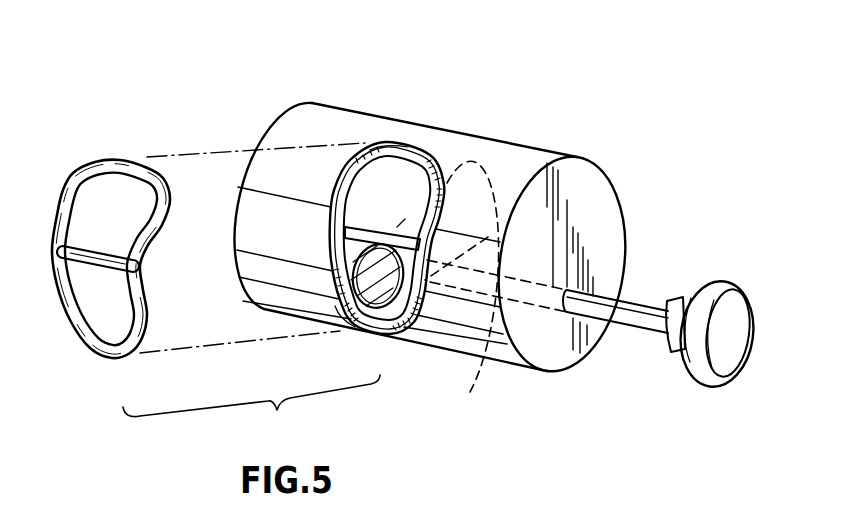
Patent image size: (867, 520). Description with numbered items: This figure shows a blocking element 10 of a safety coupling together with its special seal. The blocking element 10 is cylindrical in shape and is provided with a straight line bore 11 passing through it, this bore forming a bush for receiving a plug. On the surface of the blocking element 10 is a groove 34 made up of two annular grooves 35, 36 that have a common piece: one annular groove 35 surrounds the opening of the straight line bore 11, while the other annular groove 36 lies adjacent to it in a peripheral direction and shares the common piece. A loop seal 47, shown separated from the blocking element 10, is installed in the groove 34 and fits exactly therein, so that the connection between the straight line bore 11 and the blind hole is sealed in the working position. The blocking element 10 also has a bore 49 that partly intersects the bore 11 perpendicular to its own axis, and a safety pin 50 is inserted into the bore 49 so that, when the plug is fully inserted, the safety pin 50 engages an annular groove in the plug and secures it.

The blocking element 10 is at (610, 245).
The straight line bore 11 is at (343, 303).
The groove 34 is at (405, 132).
The annular groove 35 is at (403, 320).
The annular groove 36 is at (430, 157).
The loop seal 47 is at (118, 168).
The bore 49 is at (496, 290).
The safety pin 50 is at (637, 327).